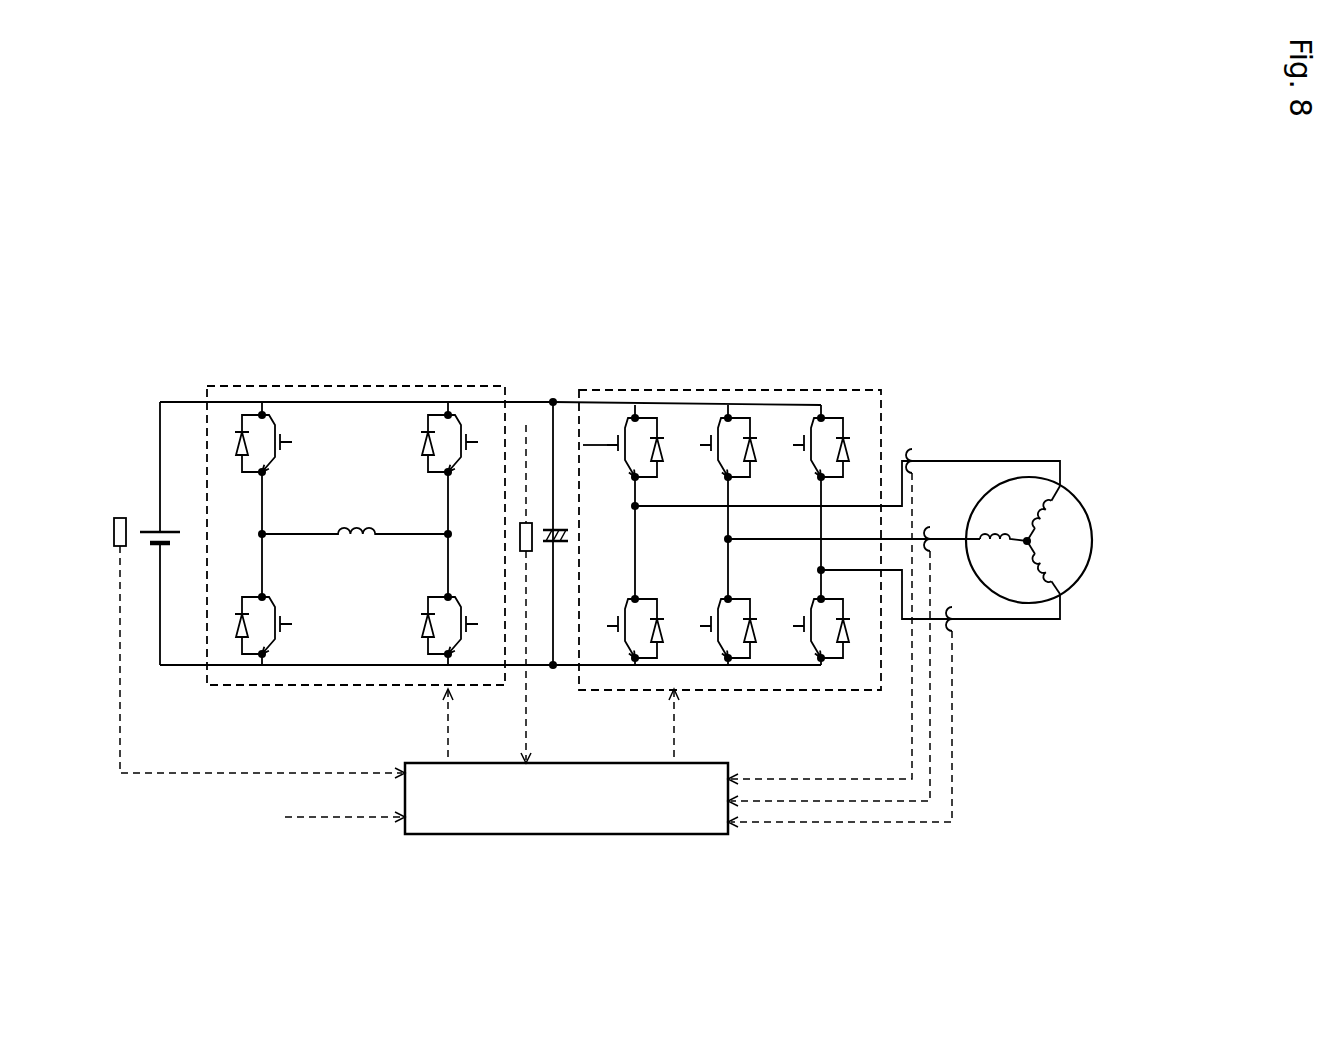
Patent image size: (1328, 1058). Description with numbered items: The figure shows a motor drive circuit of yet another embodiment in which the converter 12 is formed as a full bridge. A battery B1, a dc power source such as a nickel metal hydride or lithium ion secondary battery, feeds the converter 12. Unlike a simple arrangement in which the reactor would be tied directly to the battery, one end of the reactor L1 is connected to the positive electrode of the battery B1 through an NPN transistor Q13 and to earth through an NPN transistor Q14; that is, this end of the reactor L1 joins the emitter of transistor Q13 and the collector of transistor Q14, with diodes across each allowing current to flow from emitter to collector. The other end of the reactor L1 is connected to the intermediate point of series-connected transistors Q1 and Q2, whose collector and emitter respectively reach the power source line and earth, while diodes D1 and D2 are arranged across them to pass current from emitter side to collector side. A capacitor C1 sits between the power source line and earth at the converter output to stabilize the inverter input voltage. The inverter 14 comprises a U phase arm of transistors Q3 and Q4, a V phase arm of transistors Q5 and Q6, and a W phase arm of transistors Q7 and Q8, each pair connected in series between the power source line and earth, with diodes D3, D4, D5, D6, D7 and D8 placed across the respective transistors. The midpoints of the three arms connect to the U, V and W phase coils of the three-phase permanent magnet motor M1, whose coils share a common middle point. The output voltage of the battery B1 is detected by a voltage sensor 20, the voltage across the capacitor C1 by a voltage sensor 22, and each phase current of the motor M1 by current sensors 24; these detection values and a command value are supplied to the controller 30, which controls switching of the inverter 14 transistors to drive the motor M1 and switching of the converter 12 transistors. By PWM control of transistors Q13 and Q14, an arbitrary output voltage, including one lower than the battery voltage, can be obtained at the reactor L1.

The converter 12 is at (281, 386).
The inverter 14 is at (778, 390).
The voltage sensor 20 is at (121, 516).
The voltage sensor 22 is at (525, 425).
The current sensors 24 is at (912, 447).
The controller 30 is at (515, 834).
The battery B1 is at (167, 523).
The capacitor C1 is at (571, 515).
The reactor L1 is at (355, 516).
The motor M1 is at (1029, 518).
The NPN transistor Q1 is at (466, 440).
The NPN transistor Q2 is at (466, 621).
The NPN transistor Q3 is at (611, 444).
The NPN transistor Q4 is at (618, 624).
The NPN transistor Q5 is at (707, 444).
The NPN transistor Q6 is at (707, 624).
The NPN transistor Q7 is at (804, 444).
The NPN transistor Q8 is at (801, 624).
The NPN transistor Q13 is at (276, 440).
The NPN transistor Q14 is at (276, 621).
The diode D1 is at (416, 443).
The diode D2 is at (416, 625).
The diode D3 is at (669, 450).
The diode D4 is at (665, 632).
The diode D5 is at (758, 450).
The diode D6 is at (755, 632).
The diode D7 is at (851, 450).
The diode D8 is at (849, 632).
The U phase coil U is at (1050, 513).
The V phase coil V is at (1003, 525).
The W phase coil W is at (1036, 567).